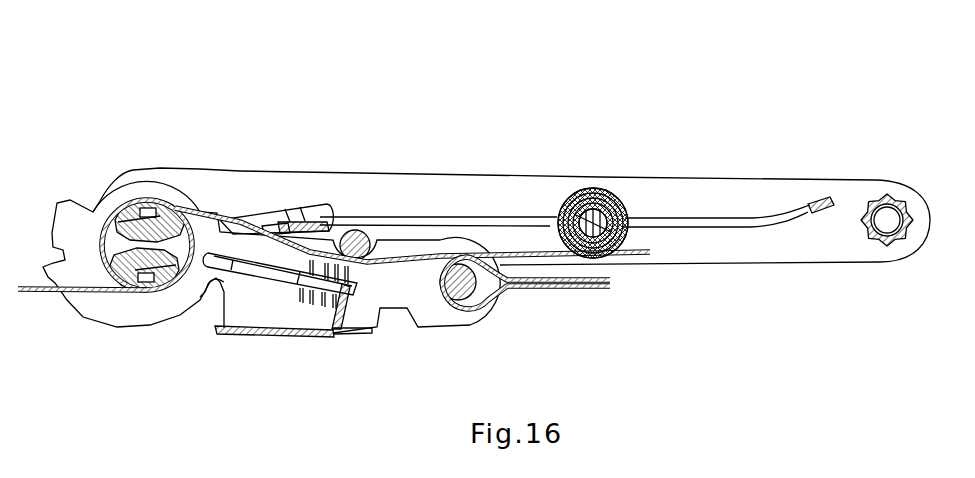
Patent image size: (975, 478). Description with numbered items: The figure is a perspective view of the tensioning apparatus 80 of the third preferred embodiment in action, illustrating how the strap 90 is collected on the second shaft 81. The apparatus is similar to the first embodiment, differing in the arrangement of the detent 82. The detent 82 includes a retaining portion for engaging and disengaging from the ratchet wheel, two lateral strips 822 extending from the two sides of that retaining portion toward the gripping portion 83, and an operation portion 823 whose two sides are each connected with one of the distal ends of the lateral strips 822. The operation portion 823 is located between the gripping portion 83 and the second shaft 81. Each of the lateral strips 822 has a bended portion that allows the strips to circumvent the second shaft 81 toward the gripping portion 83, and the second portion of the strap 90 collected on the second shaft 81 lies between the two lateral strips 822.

The tensioning apparatus 80 is at (175, 114).
The second shaft 81 is at (604, 219).
The detent 82 is at (427, 212).
The lateral strips 822 is at (513, 217).
The operation portion 823 is at (817, 196).
The gripping portion 83 is at (903, 200).
The strap 90 is at (625, 255).